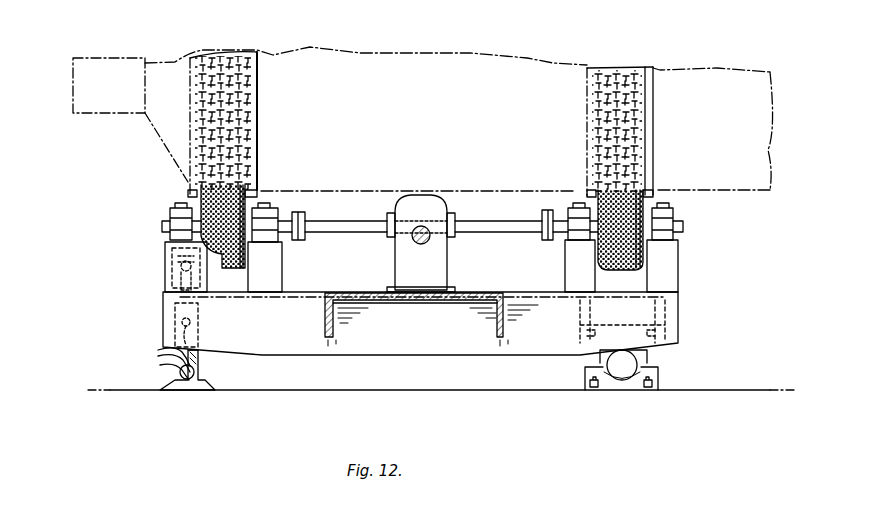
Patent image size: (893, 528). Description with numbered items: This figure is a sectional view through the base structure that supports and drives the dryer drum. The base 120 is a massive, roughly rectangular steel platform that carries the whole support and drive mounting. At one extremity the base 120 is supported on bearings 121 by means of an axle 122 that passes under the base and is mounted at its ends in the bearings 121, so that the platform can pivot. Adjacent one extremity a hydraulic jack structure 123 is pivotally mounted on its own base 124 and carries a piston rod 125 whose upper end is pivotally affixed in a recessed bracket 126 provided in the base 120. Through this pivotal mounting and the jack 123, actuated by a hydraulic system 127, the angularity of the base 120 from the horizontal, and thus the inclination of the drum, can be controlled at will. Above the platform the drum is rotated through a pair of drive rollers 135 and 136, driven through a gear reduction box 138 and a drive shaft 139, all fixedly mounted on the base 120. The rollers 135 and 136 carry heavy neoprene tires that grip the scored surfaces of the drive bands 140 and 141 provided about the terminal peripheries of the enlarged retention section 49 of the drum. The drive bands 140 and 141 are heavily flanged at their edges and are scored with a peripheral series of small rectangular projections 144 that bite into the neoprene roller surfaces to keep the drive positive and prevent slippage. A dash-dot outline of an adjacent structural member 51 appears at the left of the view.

The enlarged retention section 49 is at (424, 129).
The frame member 51 is at (110, 115).
The base 120 is at (537, 343).
The bearings 121 is at (648, 357).
The axle 122 is at (622, 367).
The hydraulic jack structure 123 is at (178, 332).
The base 124 is at (200, 382).
The piston rod 125 is at (183, 285).
The recessed bracket 126 is at (165, 262).
The hydraulic system 127 is at (160, 366).
The drive roller 135 is at (228, 202).
The drive roller 136 is at (605, 203).
The gear reduction box 138 is at (432, 259).
The drive shaft 139 is at (353, 226).
The drive band 140 is at (238, 92).
The drive band 141 is at (617, 93).
The small rectangular projections 144 is at (228, 150).